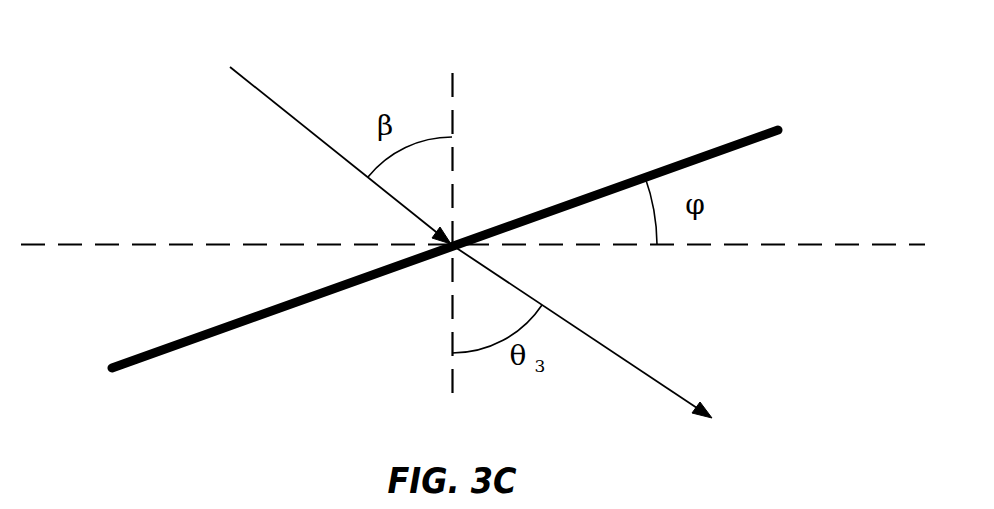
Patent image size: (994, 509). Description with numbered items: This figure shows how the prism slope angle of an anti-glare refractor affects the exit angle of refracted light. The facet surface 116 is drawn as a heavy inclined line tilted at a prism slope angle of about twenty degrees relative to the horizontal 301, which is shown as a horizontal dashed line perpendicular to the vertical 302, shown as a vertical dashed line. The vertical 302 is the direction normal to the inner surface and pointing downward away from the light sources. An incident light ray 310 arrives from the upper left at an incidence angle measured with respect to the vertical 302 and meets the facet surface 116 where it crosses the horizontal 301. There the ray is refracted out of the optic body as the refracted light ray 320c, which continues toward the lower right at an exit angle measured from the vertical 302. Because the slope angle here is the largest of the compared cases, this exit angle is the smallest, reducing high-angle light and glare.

The horizontal 301 is at (857, 245).
The vertical 302 is at (452, 112).
The facet surface 116 is at (173, 350).
The incident light ray 310 is at (284, 110).
The refracted light ray 320c is at (630, 363).